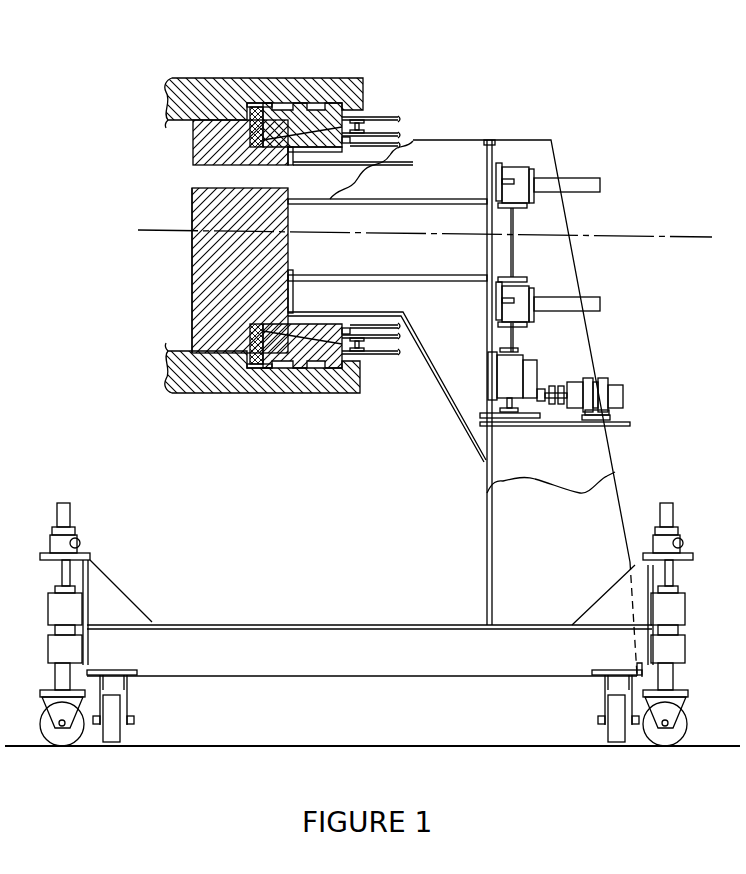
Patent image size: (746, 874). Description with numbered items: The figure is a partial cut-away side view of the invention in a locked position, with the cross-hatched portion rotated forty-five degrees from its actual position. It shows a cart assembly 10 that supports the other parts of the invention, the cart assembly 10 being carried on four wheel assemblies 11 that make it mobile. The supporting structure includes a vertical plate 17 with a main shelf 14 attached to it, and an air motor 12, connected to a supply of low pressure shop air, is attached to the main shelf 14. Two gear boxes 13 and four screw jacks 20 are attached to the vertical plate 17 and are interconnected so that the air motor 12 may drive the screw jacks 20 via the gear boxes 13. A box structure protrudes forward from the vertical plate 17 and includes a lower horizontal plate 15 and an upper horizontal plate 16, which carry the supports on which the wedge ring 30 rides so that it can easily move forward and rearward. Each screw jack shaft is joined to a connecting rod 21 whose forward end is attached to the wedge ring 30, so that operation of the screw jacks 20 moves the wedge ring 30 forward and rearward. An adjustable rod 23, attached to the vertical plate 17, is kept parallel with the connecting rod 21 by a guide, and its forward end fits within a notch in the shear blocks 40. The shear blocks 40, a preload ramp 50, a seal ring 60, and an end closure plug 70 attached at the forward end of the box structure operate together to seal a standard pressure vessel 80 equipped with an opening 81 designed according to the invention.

The cart assembly 10 is at (622, 490).
The wheel assemblies 11 is at (687, 717).
The air motor 12 is at (625, 396).
The gear boxes 13 is at (523, 376).
The main shelf 14 is at (617, 427).
The lower horizontal plate 15 is at (432, 282).
The upper horizontal plate 16 is at (458, 198).
The vertical plate 17 is at (494, 152).
The screw jacks 20 is at (503, 170).
The connecting rod 21 is at (404, 143).
The adjustable rod 23 is at (378, 119).
The wedge ring 30 is at (319, 322).
The shear blocks 40 is at (333, 100).
The preload ramp 50 is at (262, 100).
The seal ring 60 is at (247, 100).
The end closure plug 70 is at (188, 312).
The pressure vessel 80 is at (238, 396).
The opening 81 is at (186, 260).